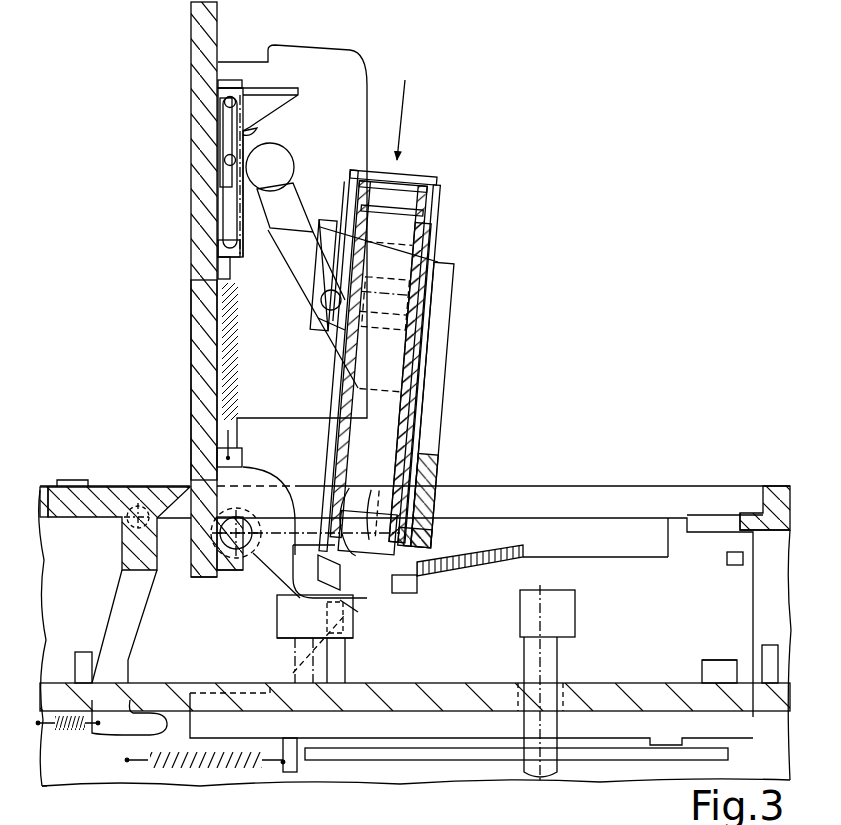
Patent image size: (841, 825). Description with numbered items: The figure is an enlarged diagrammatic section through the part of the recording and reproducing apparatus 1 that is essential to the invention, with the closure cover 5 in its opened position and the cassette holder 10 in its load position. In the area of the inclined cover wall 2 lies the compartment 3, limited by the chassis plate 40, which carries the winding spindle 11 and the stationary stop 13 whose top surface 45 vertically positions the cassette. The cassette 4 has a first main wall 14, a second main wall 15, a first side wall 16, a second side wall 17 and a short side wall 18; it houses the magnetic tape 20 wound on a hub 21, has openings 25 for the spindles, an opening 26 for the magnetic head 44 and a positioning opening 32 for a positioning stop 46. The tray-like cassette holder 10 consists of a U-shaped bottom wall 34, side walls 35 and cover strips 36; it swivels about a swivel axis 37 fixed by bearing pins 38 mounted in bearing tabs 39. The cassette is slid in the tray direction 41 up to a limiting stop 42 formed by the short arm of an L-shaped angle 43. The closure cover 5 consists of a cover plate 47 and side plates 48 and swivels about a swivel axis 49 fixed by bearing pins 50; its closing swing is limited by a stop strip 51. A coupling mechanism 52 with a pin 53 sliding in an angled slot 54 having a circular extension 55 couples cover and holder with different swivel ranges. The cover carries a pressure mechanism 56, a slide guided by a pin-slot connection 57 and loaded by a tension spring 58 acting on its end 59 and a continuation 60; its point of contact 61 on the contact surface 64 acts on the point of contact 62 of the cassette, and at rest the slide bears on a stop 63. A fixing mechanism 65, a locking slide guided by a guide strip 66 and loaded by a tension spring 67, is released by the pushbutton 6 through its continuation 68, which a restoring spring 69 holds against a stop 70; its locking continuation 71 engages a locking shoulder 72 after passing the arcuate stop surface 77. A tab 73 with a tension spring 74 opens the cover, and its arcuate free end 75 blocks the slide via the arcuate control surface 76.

The recording and reproducing apparatus 1 is at (108, 789).
The cover wall 2 is at (765, 486).
The compartment 3 is at (623, 532).
The cassette 4 is at (442, 211).
The closure cover 5 is at (186, 106).
The pushbutton 6 is at (95, 483).
The cassette holder 10 is at (458, 301).
The winding spindle 11 is at (563, 631).
The stationary stop 13 is at (710, 669).
The first main wall 14 is at (443, 233).
The second main wall 15 is at (352, 216).
The first side wall 16 is at (395, 584).
The second side wall 17 is at (398, 186).
The short side wall 18 is at (400, 207).
The magnetic tape 20 is at (372, 535).
The hub 21 is at (388, 282).
The openings 25 is at (335, 393).
The opening 26 is at (400, 558).
The positioning opening 32 is at (367, 532).
The bottom wall 34 is at (445, 462).
The side wall 35 is at (342, 252).
The cover strip 36 is at (313, 355).
The swivel axis 37 is at (338, 535).
The bearing pin 38 is at (299, 614).
The bearing tab 39 is at (347, 667).
The chassis plate 40 is at (605, 691).
The tray direction 41 is at (405, 110).
The limiting stop 42 is at (292, 613).
The L-shaped angle 43 is at (245, 589).
The magnetic head 44 is at (285, 633).
The top surface 45 is at (712, 660).
The positioning stop 46 is at (348, 626).
The cover plate 47 is at (200, 298).
The side plate 48 is at (333, 105).
The swivel axis 49 is at (232, 537).
The bearing pin 50 is at (220, 575).
The stop strip 51 is at (738, 519).
The coupling mechanism 52 is at (317, 319).
The pin 53 is at (320, 295).
The slot 54 is at (305, 309).
The circular extension 55 is at (288, 168).
The pressure mechanism 56 is at (254, 79).
The pin-slot connection 57 is at (220, 163).
The tension spring 58 is at (230, 366).
The end 59 is at (216, 253).
The continuation 60 is at (222, 458).
The point of contact 61 is at (283, 110).
The point of contact 62 is at (346, 180).
The stop 63 is at (216, 267).
The contact surface 64 is at (258, 129).
The fixing mechanism 65 is at (597, 556).
The guide strip 66 is at (730, 753).
The tension spring 67 is at (150, 767).
The continuation 68 is at (125, 590).
The restoring spring 69 is at (52, 728).
The stop 70 is at (80, 664).
The locking continuation 71 is at (743, 558).
The locking shoulder 72 is at (268, 50).
The tab 73 is at (269, 511).
The tension spring 74 is at (462, 565).
The free end 75 is at (340, 583).
The arcuate control surface 76 is at (355, 611).
The stop surface 77 is at (305, 48).